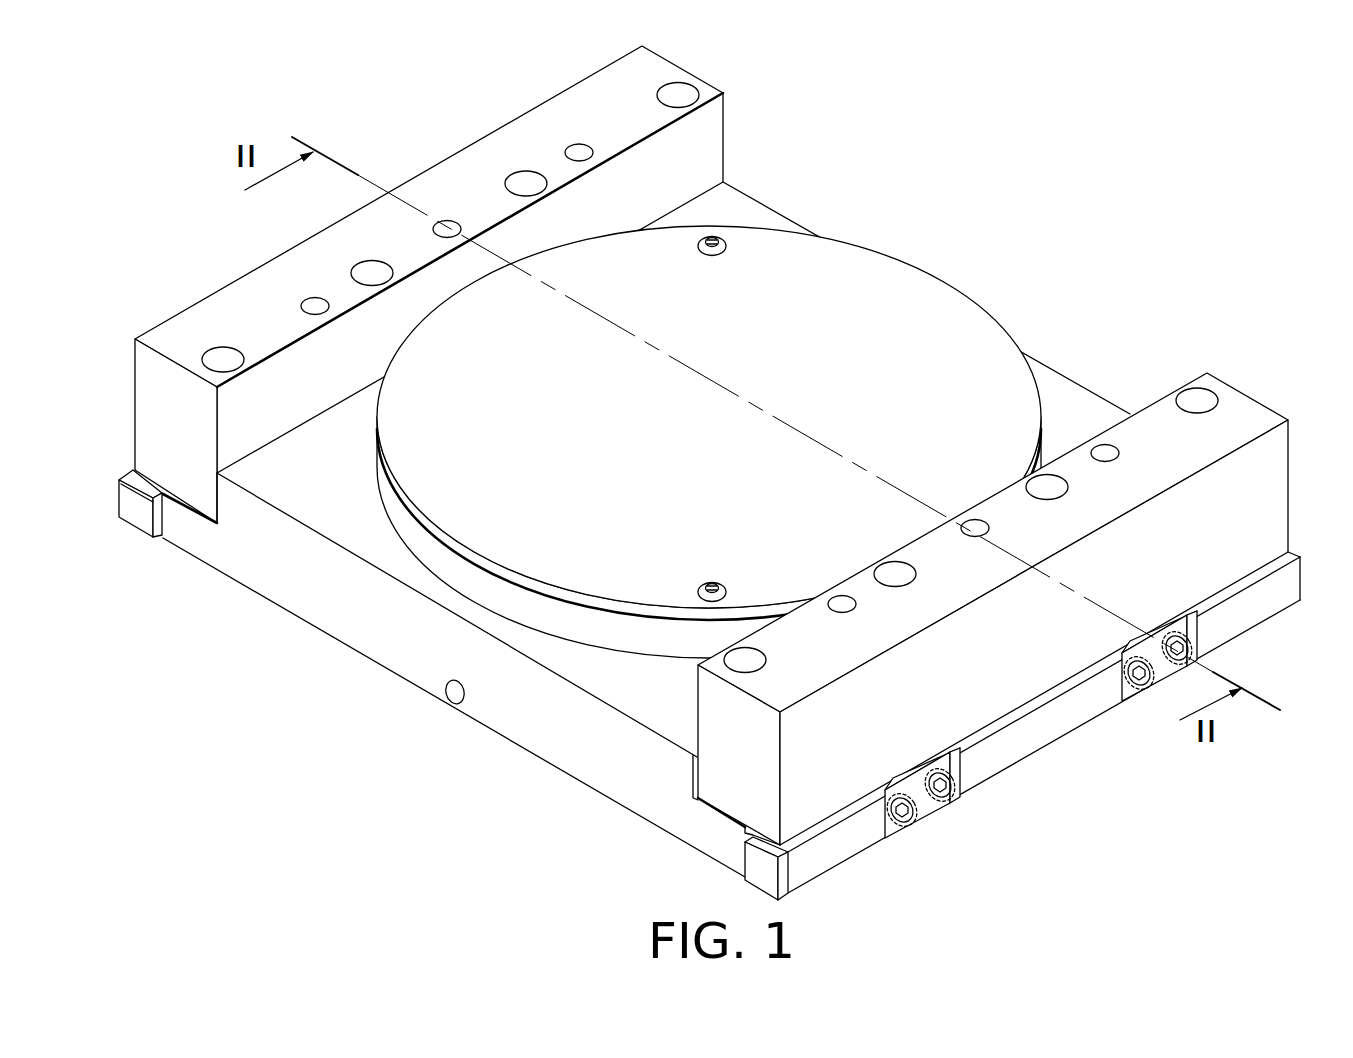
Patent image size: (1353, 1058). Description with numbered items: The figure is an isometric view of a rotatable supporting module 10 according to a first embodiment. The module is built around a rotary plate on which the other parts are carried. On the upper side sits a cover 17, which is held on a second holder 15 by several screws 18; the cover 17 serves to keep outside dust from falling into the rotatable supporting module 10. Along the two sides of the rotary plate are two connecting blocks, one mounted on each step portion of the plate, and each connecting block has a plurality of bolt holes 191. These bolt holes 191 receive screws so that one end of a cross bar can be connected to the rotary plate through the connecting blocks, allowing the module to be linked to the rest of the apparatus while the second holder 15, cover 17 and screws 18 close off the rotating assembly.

The rotatable supporting module 10 is at (952, 79).
The second holder 15 is at (637, 627).
The cover 17 is at (848, 320).
The screws 18 is at (719, 238).
The bolt holes 191 is at (1104, 447).